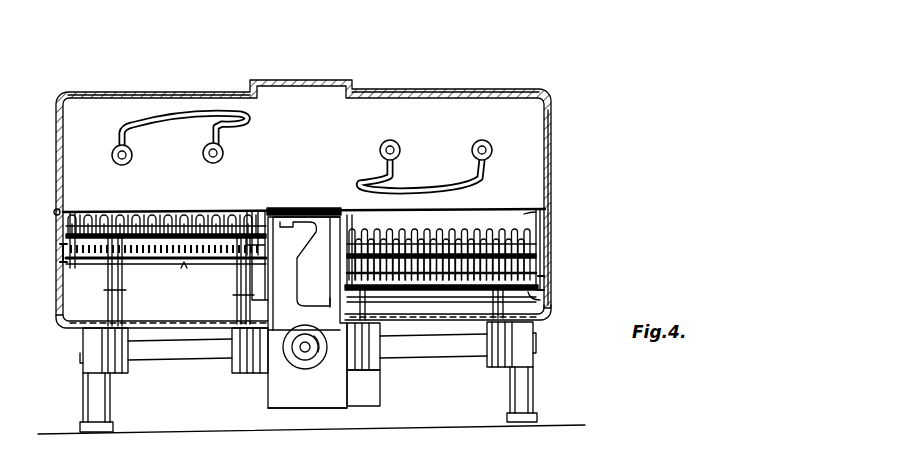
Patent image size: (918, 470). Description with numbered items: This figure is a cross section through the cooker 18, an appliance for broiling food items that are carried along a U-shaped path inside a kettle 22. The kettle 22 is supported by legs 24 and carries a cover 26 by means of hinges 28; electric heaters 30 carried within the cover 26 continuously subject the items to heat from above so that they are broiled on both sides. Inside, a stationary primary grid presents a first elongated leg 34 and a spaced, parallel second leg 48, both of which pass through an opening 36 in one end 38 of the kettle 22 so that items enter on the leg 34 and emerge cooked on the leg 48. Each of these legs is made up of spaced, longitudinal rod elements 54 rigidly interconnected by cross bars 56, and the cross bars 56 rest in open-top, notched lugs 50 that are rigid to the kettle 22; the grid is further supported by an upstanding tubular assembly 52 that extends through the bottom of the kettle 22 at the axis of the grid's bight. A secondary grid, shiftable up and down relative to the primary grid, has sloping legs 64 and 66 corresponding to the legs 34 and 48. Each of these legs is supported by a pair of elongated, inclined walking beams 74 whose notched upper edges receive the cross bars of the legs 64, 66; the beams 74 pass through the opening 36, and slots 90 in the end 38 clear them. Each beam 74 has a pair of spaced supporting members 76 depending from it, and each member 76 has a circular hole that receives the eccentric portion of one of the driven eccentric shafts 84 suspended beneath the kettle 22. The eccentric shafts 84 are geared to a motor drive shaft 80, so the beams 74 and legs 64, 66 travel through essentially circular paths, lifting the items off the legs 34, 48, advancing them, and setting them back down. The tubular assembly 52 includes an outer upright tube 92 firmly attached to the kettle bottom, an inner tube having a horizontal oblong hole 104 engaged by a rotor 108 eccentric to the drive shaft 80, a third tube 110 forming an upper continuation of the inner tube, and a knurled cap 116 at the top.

The cooker 18 is at (596, 148).
The kettle 22 is at (548, 233).
The legs 24 is at (82, 411).
The cover 26 is at (198, 90).
The hinges 28 is at (53, 212).
The electric heaters 30 is at (180, 126).
The first elongated leg 34 is at (137, 211).
The opening 36 is at (524, 213).
The end 38 is at (86, 320).
The second leg 48 is at (490, 231).
The notched lugs 50 is at (60, 262).
The tubular assembly 52 is at (337, 409).
The longitudinal rod elements 54 is at (98, 212).
The cross bars 56 is at (184, 265).
The sloping leg 64 is at (237, 211).
The sloping leg 66 is at (394, 234).
The walking beams 74 is at (123, 279).
The supporting members 76 is at (112, 290).
The drive shaft 80 is at (316, 371).
The eccentric shafts 84 is at (178, 362).
The slots 90 is at (128, 290).
The outer upright tube 92 is at (300, 412).
The oblong hole 104 is at (294, 369).
The rotor 108 is at (303, 331).
The third tube 110 is at (348, 209).
The knurled cap 116 is at (292, 205).